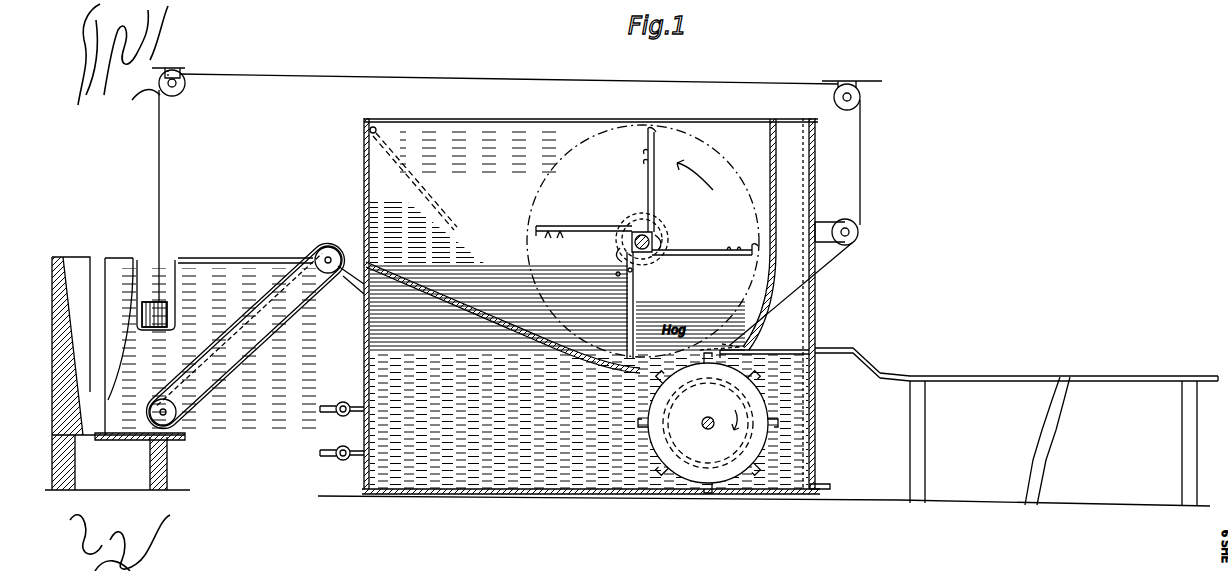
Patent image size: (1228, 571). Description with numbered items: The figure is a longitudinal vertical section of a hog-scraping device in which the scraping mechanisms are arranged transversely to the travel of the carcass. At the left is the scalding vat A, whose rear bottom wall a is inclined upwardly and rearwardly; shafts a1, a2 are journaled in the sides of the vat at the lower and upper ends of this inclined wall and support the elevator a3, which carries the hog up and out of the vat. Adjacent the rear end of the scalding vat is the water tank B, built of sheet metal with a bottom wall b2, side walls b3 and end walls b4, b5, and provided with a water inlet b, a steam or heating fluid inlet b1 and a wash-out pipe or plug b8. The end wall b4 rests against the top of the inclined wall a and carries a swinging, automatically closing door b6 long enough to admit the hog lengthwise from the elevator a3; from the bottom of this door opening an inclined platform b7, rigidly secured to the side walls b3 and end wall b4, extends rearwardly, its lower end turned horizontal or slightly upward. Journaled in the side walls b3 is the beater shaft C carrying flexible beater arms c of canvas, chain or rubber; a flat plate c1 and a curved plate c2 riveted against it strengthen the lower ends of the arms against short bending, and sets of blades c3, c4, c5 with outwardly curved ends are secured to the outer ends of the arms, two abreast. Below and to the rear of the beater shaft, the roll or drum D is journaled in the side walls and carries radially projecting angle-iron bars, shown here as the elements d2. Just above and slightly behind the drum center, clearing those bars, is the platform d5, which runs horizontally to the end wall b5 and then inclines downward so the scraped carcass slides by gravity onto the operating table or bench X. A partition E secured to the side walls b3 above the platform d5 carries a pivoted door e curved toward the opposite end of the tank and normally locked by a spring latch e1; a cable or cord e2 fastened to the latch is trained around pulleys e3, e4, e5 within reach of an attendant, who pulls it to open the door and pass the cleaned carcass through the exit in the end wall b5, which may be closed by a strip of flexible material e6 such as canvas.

The scalding vat A is at (191, 373).
The inclined rear bottom wall a is at (248, 380).
The elevator shaft a1 is at (185, 425).
The elevator shaft a2 is at (328, 258).
The elevator a3 is at (284, 335).
The water tank B is at (575, 458).
The water inlet b is at (320, 409).
The steam or heating fluid inlet b1 is at (320, 453).
The bottom wall b2 is at (628, 495).
The side walls b3 is at (542, 128).
The end wall b4 is at (364, 320).
The end wall b5 is at (813, 420).
The swinging door b6 is at (371, 199).
The inclined platform b7 is at (535, 290).
The wash out pipe or plug b8 is at (827, 487).
The beater shaft C is at (627, 227).
The flexible beater arms c is at (620, 277).
The flat plate c1 is at (658, 243).
The curved plate c2 is at (634, 213).
The blade c3 is at (523, 237).
The blade c4 is at (540, 233).
The blade c5 is at (556, 236).
The roll, drum or cylinder D is at (708, 423).
The drum teeth d2 is at (683, 423).
The platform d5 is at (793, 350).
The partition E is at (774, 167).
The door e is at (768, 282).
The spring latch e1 is at (748, 341).
The cable or cord e2 is at (863, 118).
The pulley e3 is at (856, 223).
The pulley e4 is at (850, 85).
The pulley e5 is at (182, 80).
The strip of flexible material e6 is at (813, 315).
The operating table or bench X is at (1054, 377).